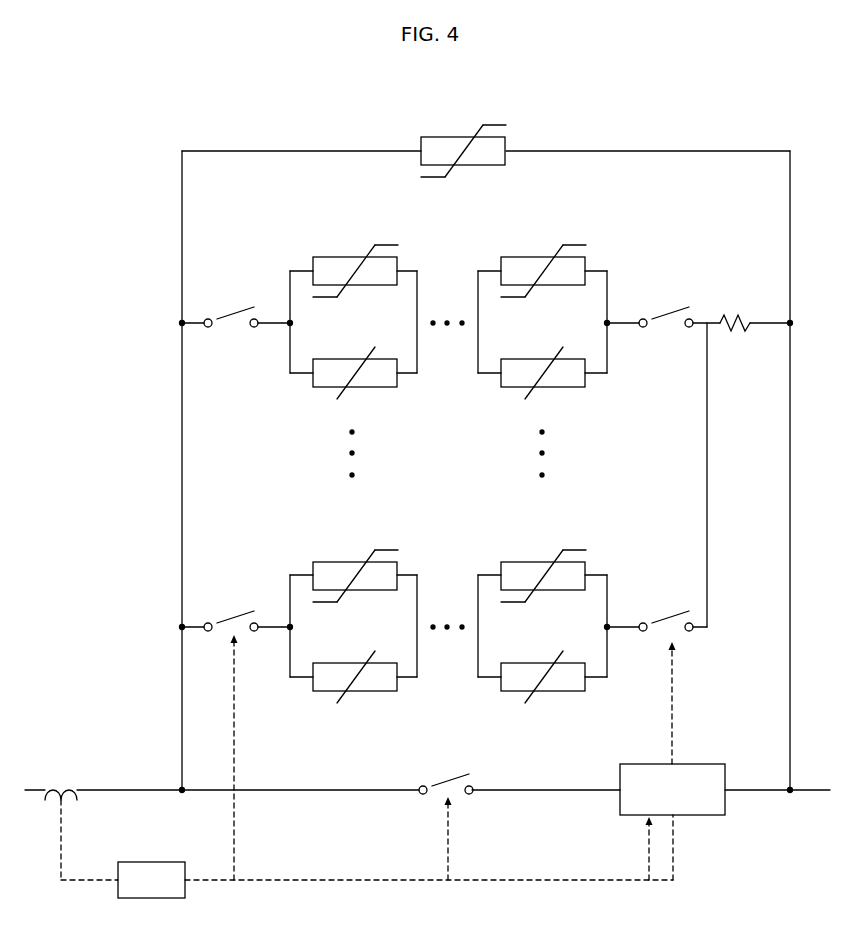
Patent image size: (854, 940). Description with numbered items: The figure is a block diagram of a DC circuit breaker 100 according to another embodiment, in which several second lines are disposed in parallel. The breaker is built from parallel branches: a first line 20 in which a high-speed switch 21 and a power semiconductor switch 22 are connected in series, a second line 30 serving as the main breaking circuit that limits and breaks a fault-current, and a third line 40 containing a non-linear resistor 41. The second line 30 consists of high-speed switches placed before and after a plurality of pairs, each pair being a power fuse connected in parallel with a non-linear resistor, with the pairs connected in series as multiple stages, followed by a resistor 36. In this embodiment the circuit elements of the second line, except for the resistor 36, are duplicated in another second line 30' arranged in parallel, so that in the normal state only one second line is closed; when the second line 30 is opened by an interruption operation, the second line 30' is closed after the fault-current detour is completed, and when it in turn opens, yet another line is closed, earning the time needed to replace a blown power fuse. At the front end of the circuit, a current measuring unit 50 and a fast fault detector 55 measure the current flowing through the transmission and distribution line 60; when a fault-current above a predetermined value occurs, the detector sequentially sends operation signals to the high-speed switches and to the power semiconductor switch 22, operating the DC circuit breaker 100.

The DC circuit breaker 100 is at (150, 130).
The third line 40 is at (770, 151).
The non-linear resistor 41 is at (459, 137).
The resistor 36 is at (738, 316).
The second line 30 is at (750, 449).
The second line 30' is at (705, 652).
The current measuring unit 50 is at (53, 779).
The fast fault detector 55 is at (151, 862).
The high-speed switch 21 is at (448, 780).
The power semiconductor switch 22 is at (700, 764).
The first line 20 is at (772, 790).
The transmission and distribution line 60 is at (815, 790).